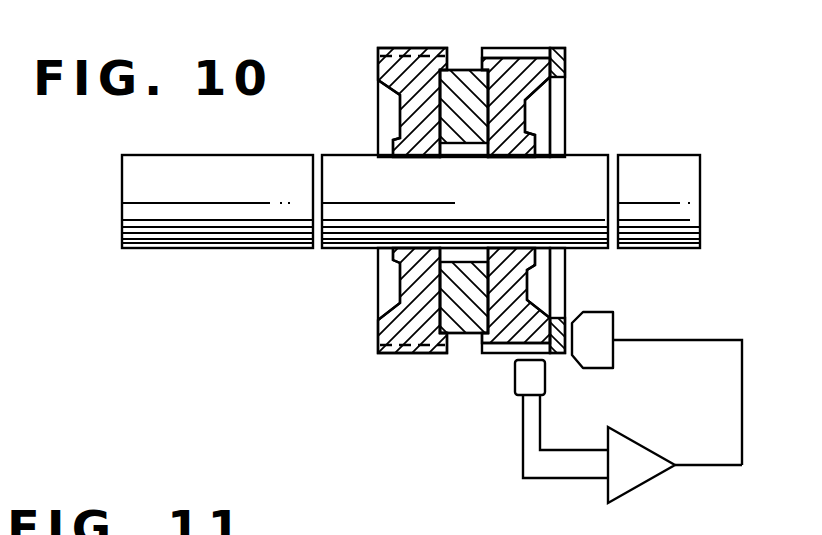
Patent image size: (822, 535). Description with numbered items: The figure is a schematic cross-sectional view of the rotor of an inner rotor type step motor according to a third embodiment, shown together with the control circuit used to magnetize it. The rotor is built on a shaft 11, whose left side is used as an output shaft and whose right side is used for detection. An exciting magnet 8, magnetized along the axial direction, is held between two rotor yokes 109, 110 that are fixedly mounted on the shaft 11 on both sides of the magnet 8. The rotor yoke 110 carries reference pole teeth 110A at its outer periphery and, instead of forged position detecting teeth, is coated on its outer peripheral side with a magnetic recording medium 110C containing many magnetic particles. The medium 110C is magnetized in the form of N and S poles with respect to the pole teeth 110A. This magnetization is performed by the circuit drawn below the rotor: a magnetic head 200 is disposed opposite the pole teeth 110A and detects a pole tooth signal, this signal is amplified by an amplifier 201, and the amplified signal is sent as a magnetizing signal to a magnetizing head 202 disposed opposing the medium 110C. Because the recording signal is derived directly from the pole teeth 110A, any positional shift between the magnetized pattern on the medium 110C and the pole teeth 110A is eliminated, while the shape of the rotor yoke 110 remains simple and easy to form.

The exciting magnet 8 is at (458, 78).
The shaft 11 is at (342, 250).
The rotor yoke 109 is at (415, 50).
The rotor yoke 110 is at (515, 117).
The pole teeth 110A is at (512, 47).
The magnetic recording medium 110C is at (566, 60).
The magnetic head 200 is at (515, 380).
The amplifier 201 is at (638, 490).
The magnetizing head 202 is at (598, 310).